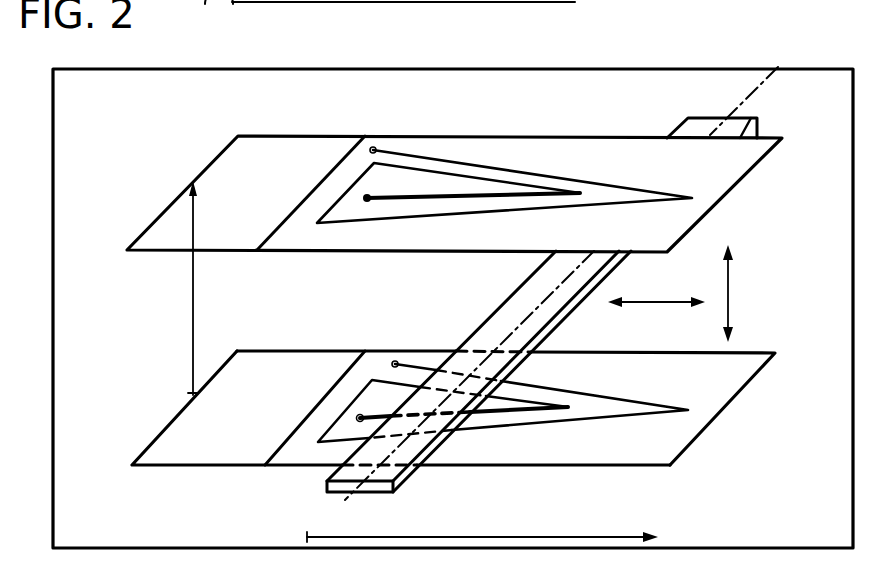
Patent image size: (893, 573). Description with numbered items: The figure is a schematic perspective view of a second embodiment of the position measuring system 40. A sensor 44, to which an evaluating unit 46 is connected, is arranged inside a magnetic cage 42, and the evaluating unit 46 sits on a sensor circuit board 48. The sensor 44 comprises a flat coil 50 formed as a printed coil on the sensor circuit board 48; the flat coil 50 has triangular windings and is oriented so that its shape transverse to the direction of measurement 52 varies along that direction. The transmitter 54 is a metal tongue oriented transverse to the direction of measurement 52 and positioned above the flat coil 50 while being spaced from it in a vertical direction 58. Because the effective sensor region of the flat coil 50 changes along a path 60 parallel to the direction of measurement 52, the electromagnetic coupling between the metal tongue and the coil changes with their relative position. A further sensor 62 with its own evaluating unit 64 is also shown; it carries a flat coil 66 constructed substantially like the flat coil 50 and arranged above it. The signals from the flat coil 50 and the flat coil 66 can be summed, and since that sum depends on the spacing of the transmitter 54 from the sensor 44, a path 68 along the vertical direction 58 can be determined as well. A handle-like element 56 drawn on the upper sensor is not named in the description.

The position measuring system 40 is at (44, 461).
The magnetic cage 42 is at (62, 549).
The sensor 44 is at (573, 468).
The evaluating unit 46 is at (153, 467).
The sensor circuit board 48 is at (743, 376).
The flat coil 50 is at (508, 434).
The direction of measurement 52 is at (659, 301).
The transmitter 54 is at (500, 317).
The actuating handle 56 is at (740, 100).
The vertical direction 58 is at (733, 294).
The path 60 is at (477, 537).
The further sensor 62 is at (588, 150).
The evaluating unit 64 is at (263, 136).
The flat coil 66 is at (500, 167).
The path 68 is at (193, 297).